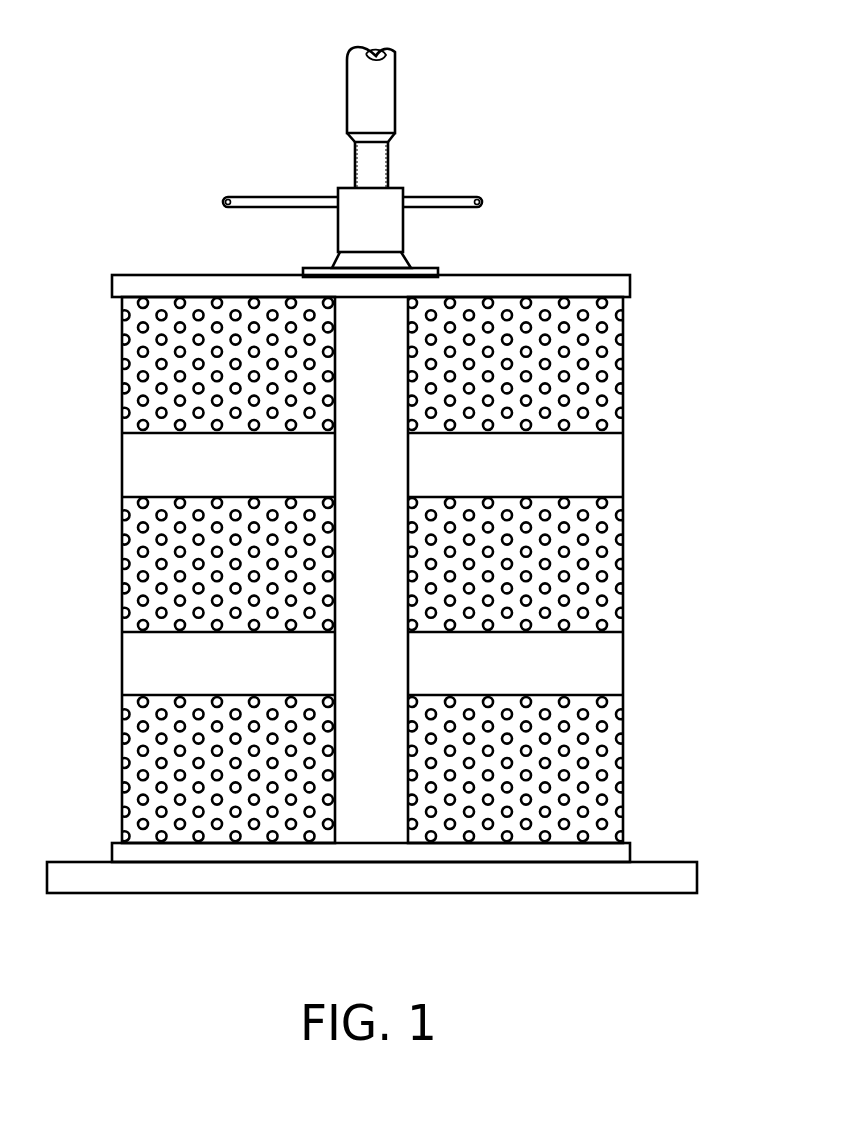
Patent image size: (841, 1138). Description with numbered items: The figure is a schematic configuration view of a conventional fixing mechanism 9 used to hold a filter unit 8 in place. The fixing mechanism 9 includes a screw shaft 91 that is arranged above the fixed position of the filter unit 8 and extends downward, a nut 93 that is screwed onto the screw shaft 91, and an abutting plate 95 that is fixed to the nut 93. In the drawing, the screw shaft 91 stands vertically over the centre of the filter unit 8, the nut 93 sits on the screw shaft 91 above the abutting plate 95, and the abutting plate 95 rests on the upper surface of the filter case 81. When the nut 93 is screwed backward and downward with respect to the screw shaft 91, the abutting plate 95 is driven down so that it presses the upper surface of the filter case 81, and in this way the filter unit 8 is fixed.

The filter unit 8 is at (552, 228).
The filter case 81 is at (140, 284).
The fixing mechanism 9 is at (322, 152).
The screw shaft 91 is at (378, 170).
The nut 93 is at (350, 192).
The abutting plate 95 is at (318, 268).